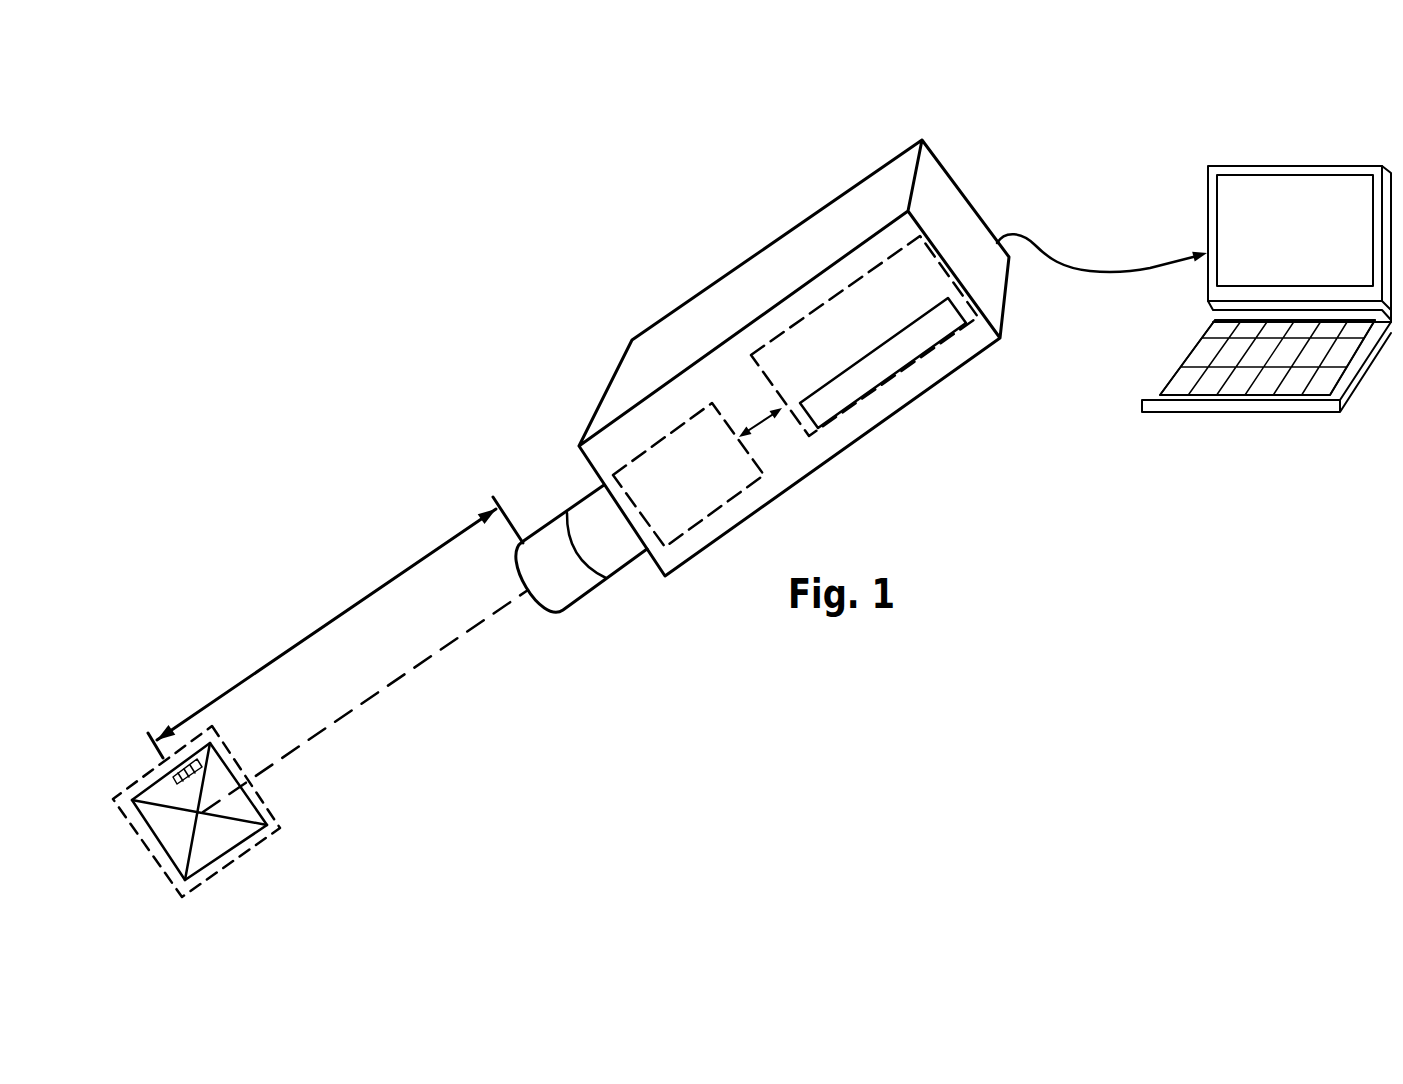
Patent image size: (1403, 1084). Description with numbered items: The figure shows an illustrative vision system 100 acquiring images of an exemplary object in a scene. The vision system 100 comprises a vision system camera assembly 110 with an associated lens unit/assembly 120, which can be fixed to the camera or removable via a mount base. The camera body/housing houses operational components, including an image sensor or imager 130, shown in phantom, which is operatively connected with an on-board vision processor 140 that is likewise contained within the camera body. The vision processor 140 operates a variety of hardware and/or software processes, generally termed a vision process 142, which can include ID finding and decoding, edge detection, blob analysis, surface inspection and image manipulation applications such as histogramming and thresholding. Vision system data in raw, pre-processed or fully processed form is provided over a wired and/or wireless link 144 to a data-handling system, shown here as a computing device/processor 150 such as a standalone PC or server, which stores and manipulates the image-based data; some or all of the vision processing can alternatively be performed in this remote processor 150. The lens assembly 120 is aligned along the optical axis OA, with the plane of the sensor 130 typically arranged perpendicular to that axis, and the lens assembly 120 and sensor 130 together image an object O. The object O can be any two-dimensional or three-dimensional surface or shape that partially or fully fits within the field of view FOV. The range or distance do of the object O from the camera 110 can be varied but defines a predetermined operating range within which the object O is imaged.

The vision system 100 is at (859, 170).
The vision system camera assembly 110 is at (955, 170).
The lens unit/assembly 120 is at (575, 488).
The image sensor 130 is at (678, 428).
The vision processor 140 is at (961, 274).
The vision process 142 is at (802, 402).
The link 144 is at (1105, 270).
The computing device/processor 150 is at (1350, 160).
The range/distance do is at (312, 630).
The optical axis OA is at (451, 643).
The field of view FOV is at (288, 823).
The object O is at (203, 815).